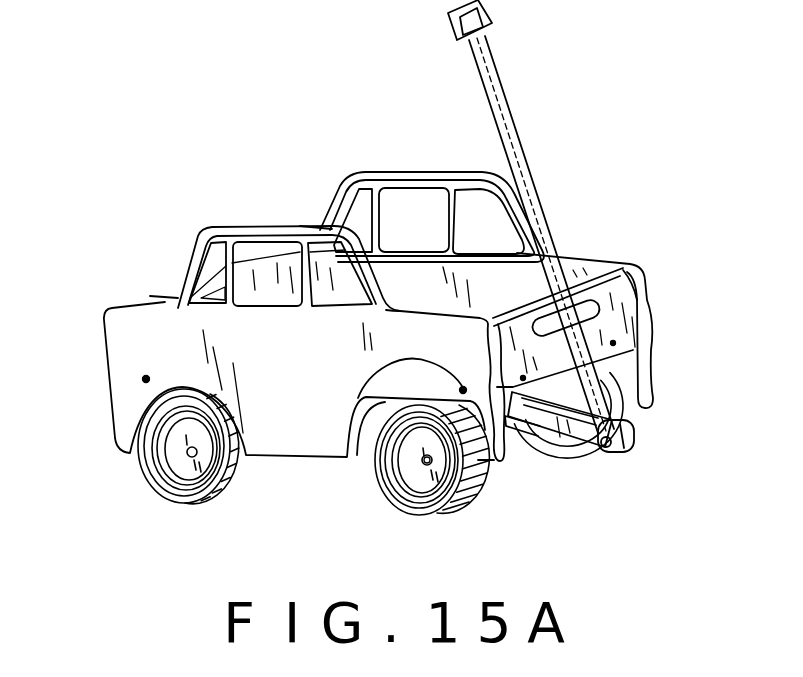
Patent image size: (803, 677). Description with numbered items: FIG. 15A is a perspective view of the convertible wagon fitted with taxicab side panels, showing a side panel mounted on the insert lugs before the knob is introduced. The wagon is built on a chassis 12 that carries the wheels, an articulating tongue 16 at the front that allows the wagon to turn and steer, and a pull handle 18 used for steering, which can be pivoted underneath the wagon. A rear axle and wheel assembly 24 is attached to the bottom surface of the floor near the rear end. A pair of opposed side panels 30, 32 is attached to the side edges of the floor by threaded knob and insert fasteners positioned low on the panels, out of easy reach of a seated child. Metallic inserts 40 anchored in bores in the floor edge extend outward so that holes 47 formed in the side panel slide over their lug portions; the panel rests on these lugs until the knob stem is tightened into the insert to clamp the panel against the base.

The chassis 12 is at (522, 446).
The articulating tongue 16 is at (553, 413).
The pull handle 18 is at (540, 186).
The rear axle and wheel assembly 24 is at (648, 277).
The side panel 30 is at (318, 383).
The side panel 32 is at (367, 172).
The metallic insert 40 is at (146, 376).
The hole 47 is at (143, 383).